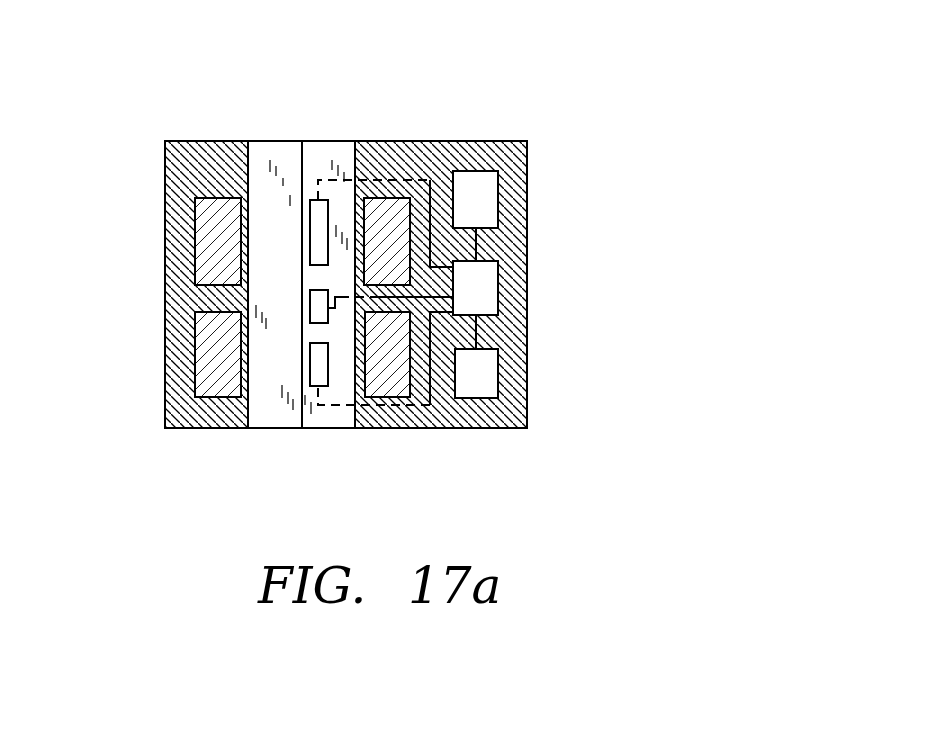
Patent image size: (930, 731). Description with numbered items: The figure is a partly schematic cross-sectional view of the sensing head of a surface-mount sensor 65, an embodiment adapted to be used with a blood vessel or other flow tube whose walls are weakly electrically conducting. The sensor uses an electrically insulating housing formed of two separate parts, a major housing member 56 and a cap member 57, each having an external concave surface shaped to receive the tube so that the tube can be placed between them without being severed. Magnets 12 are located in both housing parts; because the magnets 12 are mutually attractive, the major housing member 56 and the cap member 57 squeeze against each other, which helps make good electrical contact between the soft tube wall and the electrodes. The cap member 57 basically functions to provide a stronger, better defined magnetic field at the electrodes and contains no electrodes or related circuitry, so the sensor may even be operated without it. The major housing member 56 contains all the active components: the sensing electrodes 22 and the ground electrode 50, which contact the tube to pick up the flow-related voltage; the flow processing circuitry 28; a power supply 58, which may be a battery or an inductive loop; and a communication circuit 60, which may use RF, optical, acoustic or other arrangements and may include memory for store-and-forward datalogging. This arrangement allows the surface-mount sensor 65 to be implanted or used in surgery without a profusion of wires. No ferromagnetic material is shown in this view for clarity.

The magnet 12 is at (197, 270).
The sensing electrode 22 is at (309, 228).
The flow processing circuitry 28 is at (498, 283).
The ground electrode 50 is at (310, 305).
The major housing member 56 is at (493, 430).
The cap member 57 is at (195, 428).
The power supply 58 is at (498, 210).
The communication circuit 60 is at (498, 371).
The surface-mount sensor 65 is at (715, 337).